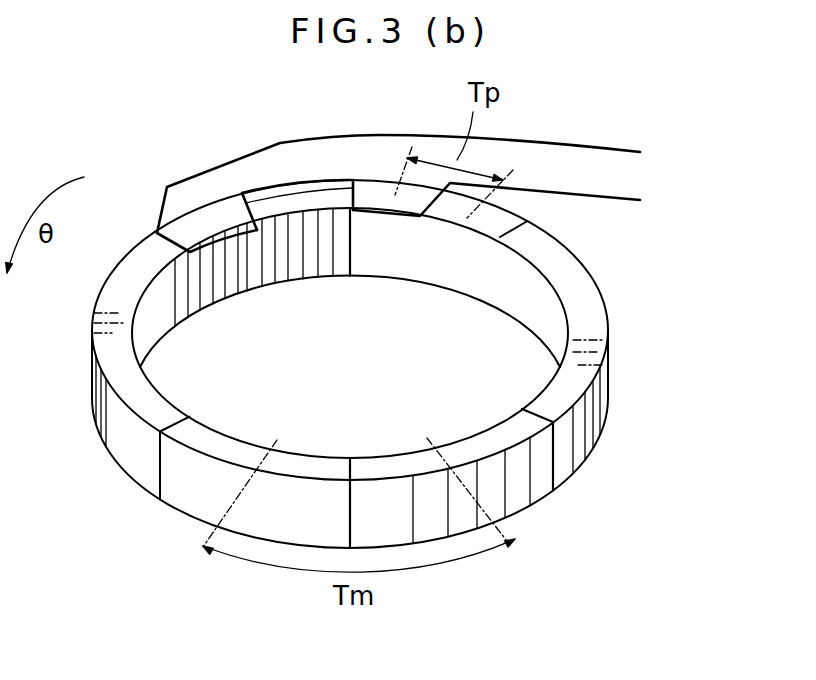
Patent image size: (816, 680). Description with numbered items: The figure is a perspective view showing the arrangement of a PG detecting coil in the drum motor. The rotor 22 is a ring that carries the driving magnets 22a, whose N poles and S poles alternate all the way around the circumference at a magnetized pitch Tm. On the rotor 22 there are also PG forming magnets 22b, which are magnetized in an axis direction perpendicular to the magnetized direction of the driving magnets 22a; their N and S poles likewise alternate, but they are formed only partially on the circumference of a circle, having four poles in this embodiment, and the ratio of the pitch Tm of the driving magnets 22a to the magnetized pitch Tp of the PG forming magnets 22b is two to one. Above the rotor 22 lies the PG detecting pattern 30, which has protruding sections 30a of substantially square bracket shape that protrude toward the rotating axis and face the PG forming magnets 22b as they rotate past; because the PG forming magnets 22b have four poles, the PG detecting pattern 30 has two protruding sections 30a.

The rotor 22 is at (596, 491).
The driving magnets 22a is at (365, 262).
The PG forming magnets 22b is at (232, 207).
The PG detecting pattern 30 is at (605, 148).
The protruding sections 30a is at (224, 257).